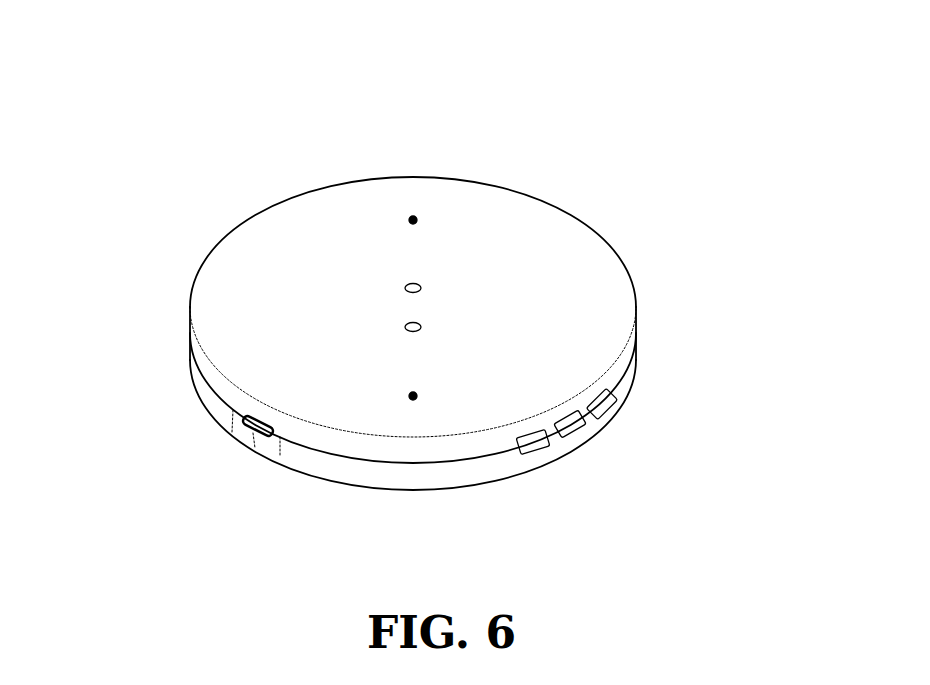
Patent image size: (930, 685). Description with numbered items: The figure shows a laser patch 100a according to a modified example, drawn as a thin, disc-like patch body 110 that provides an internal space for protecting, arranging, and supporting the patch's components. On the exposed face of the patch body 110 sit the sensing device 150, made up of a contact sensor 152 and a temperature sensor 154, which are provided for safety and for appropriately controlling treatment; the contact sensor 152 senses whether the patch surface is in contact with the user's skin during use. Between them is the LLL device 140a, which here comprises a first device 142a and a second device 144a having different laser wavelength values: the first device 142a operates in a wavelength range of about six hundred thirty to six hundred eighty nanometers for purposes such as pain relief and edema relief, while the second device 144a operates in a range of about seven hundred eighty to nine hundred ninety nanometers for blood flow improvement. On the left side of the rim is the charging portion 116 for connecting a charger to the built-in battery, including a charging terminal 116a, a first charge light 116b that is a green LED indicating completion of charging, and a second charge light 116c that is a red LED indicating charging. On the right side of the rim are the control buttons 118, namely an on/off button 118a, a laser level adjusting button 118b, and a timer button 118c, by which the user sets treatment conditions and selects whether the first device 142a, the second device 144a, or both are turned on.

The laser patch 100a is at (114, 48).
The patch body 110 is at (472, 200).
The sensing device 150 is at (294, 237).
The contact sensor 152 is at (410, 216).
The temperature sensor 154 is at (412, 390).
The LLL device 140a is at (619, 280).
The first device 142a is at (421, 288).
The second device 144a is at (421, 326).
The charging portion 116 is at (210, 489).
The charging terminal 116a is at (250, 445).
The first charge light 116b is at (243, 424).
The second charge light 116c is at (298, 478).
The control buttons 118 is at (671, 467).
The on/off button 118a is at (550, 447).
The laser level adjusting button 118b is at (583, 432).
The timer button 118c is at (617, 402).